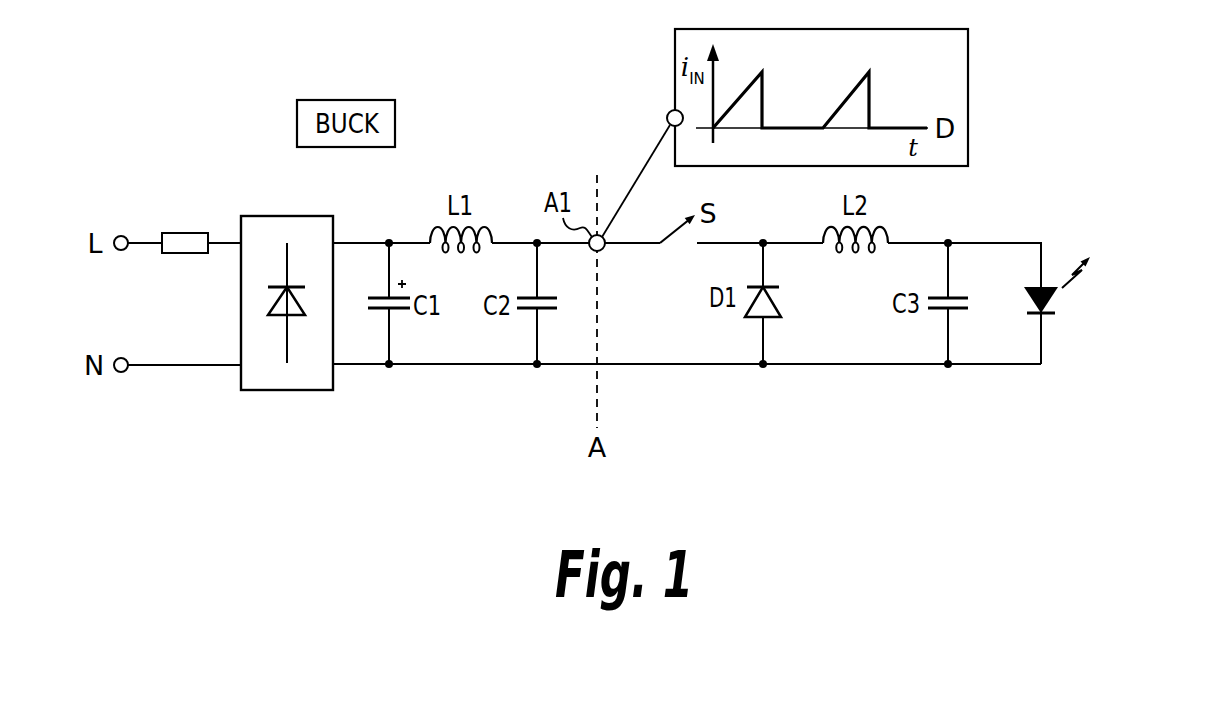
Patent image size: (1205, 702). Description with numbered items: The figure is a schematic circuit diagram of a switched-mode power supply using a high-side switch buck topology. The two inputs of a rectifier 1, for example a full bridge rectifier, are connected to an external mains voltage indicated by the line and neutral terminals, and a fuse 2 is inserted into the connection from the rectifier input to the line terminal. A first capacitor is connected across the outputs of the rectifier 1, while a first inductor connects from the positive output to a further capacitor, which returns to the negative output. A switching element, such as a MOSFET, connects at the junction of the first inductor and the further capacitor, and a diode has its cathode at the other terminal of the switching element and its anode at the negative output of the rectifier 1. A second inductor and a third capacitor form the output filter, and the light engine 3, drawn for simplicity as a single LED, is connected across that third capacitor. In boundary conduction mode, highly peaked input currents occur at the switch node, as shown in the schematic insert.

The rectifier 1 is at (277, 392).
The fuse 2 is at (181, 233).
The light engine 3 is at (1089, 289).